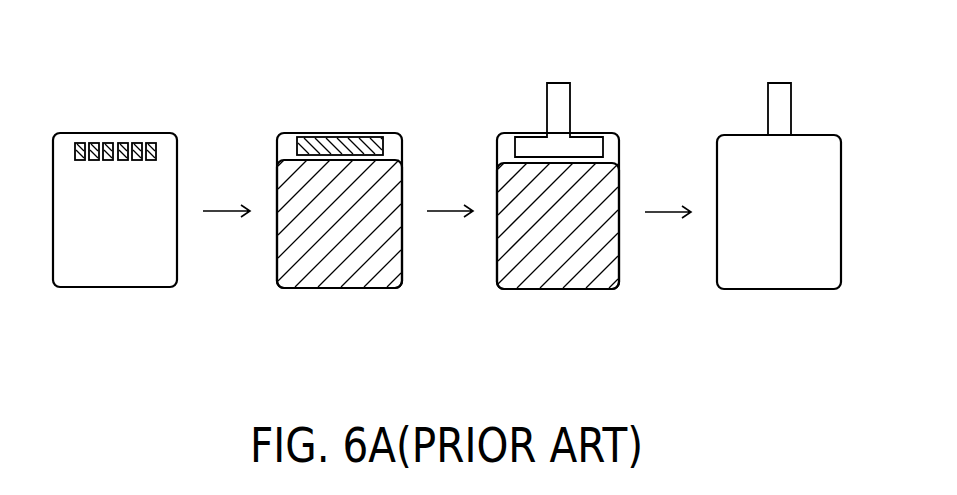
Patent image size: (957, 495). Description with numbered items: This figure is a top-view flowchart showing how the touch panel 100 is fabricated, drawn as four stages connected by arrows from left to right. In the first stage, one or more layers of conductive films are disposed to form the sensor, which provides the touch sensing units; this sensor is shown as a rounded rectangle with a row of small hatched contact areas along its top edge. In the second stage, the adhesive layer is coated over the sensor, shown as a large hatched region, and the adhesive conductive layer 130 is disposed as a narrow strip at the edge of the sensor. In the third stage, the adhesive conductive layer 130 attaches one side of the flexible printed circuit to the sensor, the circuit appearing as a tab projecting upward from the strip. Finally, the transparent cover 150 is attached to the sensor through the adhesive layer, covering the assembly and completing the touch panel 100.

The touch panel 100 is at (795, 408).
The adhesive conductive layer 130 is at (342, 146).
The transparent cover 150 is at (766, 280).